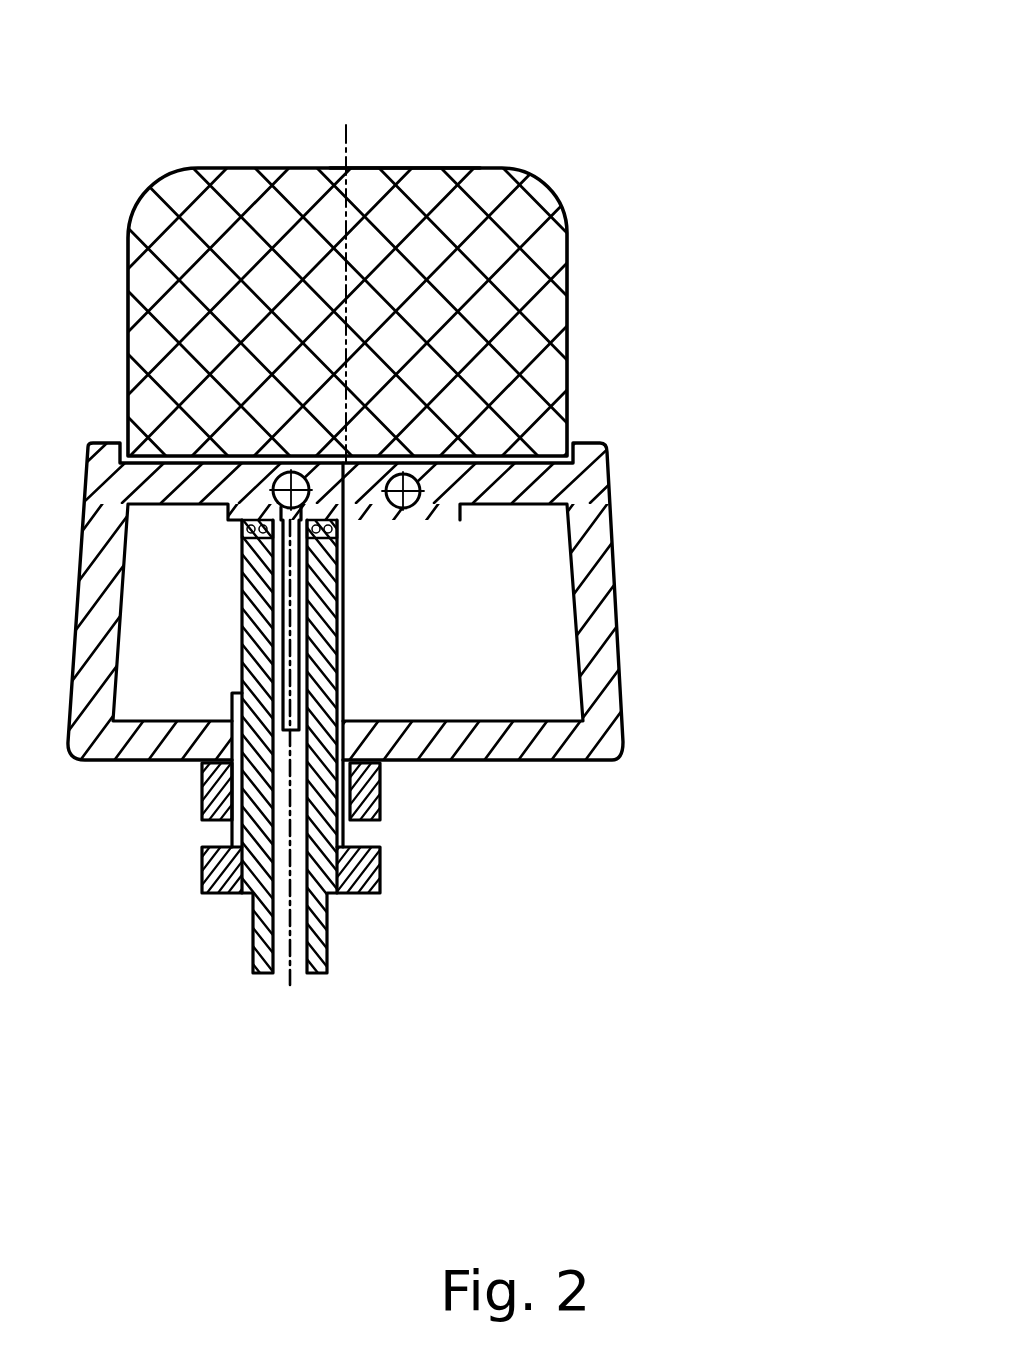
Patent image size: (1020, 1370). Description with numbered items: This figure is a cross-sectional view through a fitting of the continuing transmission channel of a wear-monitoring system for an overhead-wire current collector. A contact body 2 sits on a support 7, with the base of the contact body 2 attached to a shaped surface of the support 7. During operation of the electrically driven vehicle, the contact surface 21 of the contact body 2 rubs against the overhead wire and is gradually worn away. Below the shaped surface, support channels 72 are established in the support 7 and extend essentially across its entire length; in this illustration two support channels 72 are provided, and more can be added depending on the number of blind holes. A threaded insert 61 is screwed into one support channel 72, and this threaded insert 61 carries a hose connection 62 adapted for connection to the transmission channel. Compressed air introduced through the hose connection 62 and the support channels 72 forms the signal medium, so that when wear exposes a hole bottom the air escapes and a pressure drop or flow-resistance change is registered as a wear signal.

The contact body 2 is at (482, 255).
The contact surface 21 is at (407, 167).
The support 7 is at (580, 510).
The support channel 72 is at (405, 462).
The threaded insert 61 is at (305, 724).
The hose connection 62 is at (327, 943).